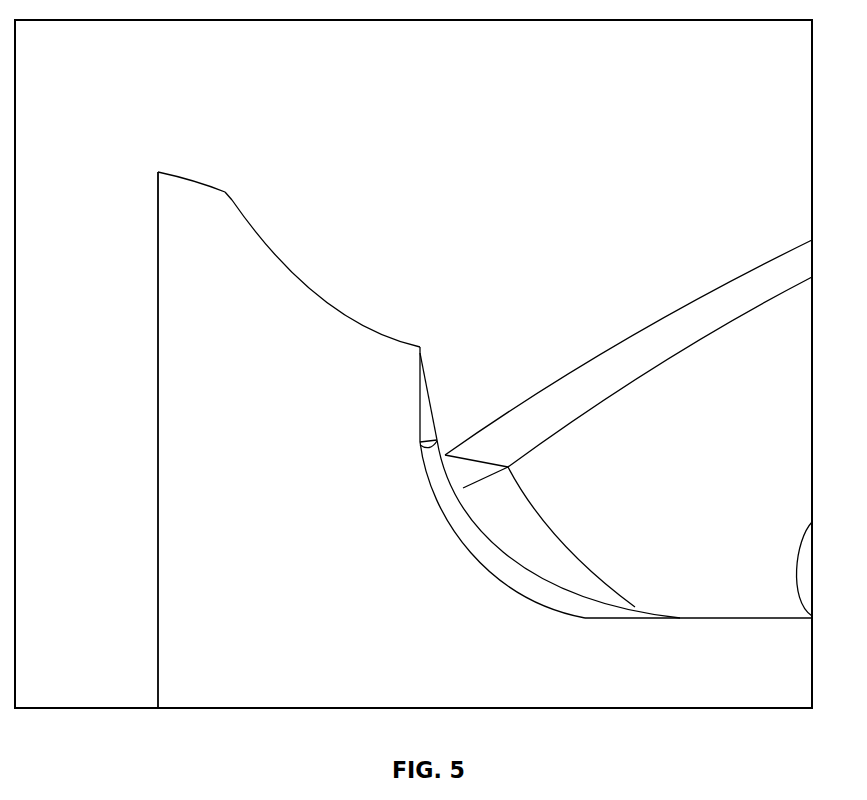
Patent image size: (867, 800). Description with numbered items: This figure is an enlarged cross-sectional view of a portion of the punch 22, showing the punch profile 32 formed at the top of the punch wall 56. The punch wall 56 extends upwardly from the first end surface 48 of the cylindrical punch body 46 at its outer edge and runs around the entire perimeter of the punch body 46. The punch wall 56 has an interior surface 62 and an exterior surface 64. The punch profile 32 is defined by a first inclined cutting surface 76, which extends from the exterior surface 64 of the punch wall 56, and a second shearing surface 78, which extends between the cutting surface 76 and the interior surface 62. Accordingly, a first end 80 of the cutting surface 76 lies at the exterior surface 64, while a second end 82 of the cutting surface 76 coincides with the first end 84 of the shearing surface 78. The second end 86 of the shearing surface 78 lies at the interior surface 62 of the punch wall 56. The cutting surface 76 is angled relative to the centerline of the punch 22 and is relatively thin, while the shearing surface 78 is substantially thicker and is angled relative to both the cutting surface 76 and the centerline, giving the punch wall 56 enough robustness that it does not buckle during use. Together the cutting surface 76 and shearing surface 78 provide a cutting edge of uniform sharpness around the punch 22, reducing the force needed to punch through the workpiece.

The punch 22 is at (522, 257).
The punch profile 32 is at (293, 240).
The punch body 46 is at (652, 678).
The first end surface 48 is at (716, 618).
The punch wall 56 is at (270, 438).
The interior surface 62 is at (438, 433).
The exterior surface 64 is at (158, 453).
The cutting surface 76 is at (193, 182).
The shearing surface 78 is at (320, 297).
The first end of the cutting surface 80 is at (158, 172).
The second end of the cutting surface 82 is at (225, 192).
The first end of the shearing surface 84 is at (275, 175).
The second end of the shearing surface 86 is at (420, 347).